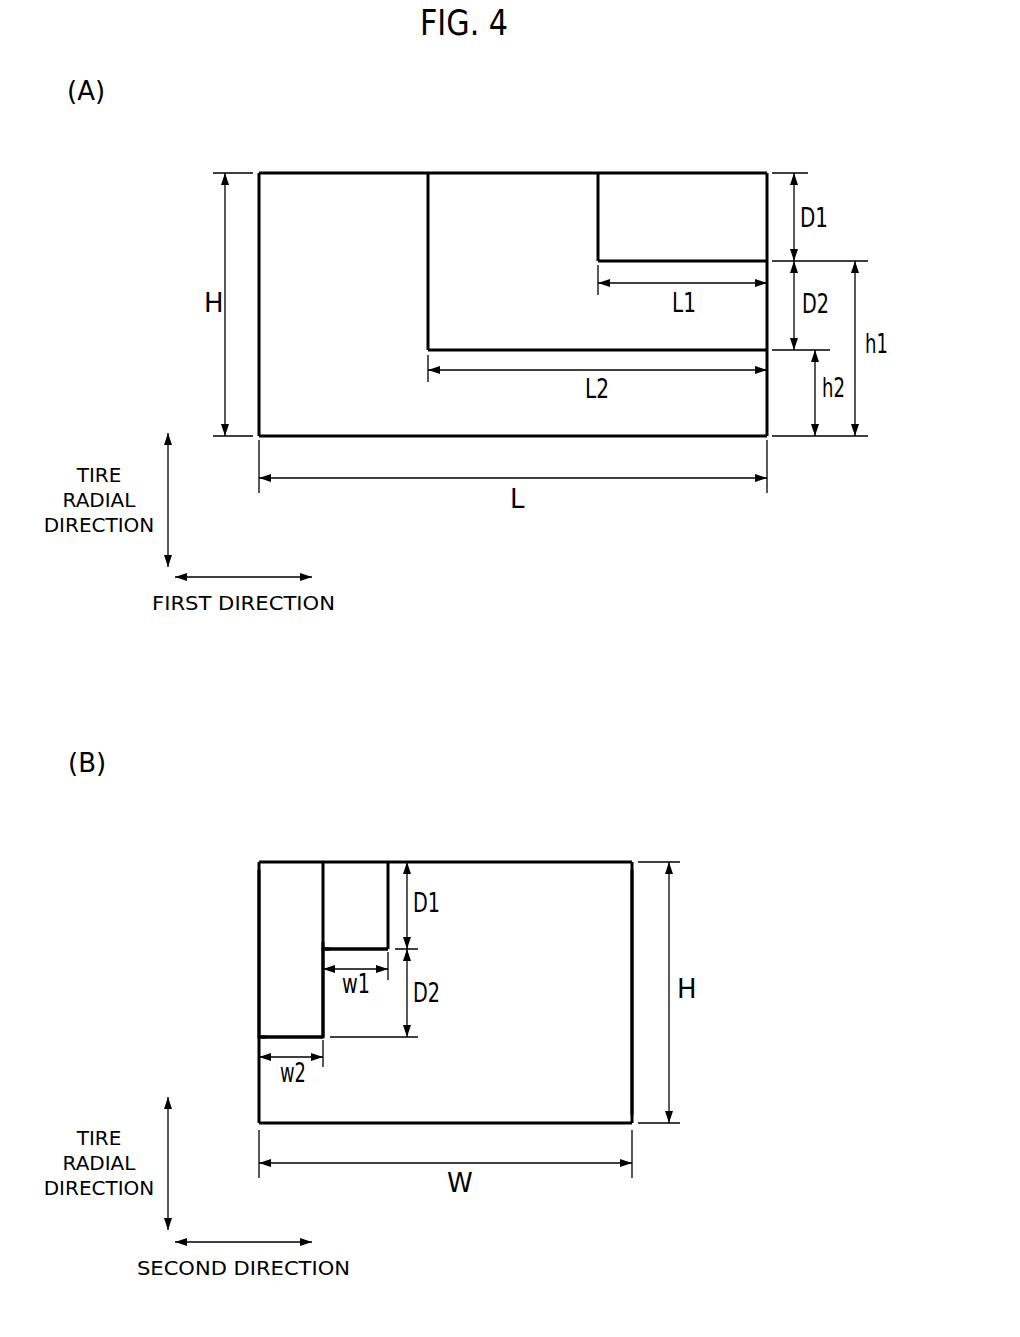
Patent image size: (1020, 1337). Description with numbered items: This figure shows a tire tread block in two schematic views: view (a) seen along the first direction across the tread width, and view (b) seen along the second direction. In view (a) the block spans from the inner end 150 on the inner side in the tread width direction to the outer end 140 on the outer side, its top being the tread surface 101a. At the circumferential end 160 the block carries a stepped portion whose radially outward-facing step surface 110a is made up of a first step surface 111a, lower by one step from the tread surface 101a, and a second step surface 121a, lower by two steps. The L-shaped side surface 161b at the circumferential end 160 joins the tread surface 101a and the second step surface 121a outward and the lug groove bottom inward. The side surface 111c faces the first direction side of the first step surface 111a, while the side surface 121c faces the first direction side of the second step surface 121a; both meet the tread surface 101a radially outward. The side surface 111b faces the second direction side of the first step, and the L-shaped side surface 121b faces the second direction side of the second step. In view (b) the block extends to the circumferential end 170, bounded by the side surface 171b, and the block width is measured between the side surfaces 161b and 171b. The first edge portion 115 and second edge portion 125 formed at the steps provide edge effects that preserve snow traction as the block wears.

The tread surface 101a is at (303, 173).
The inner end 150 is at (252, 208).
The outer end 140 is at (774, 190).
The side surface 161b is at (375, 190).
The side surface 121c is at (428, 203).
The side surface 121b is at (524, 188).
The side surface 111c is at (598, 203).
The side surface 111b is at (688, 190).
The first step surface 111a is at (672, 261).
The second step surface 121a is at (504, 350).
The circumferential end 160 is at (231, 931).
The circumferential end 170 is at (638, 904).
The side surface 171b is at (632, 931).
The step surface 110a is at (160, 958).
The first edge portion 115 is at (323, 949).
The second edge portion 125 is at (259, 1037).